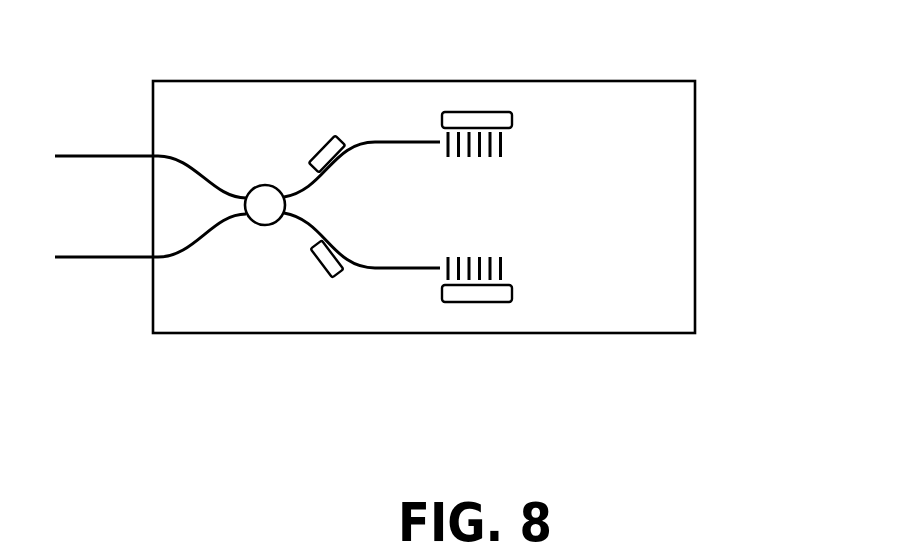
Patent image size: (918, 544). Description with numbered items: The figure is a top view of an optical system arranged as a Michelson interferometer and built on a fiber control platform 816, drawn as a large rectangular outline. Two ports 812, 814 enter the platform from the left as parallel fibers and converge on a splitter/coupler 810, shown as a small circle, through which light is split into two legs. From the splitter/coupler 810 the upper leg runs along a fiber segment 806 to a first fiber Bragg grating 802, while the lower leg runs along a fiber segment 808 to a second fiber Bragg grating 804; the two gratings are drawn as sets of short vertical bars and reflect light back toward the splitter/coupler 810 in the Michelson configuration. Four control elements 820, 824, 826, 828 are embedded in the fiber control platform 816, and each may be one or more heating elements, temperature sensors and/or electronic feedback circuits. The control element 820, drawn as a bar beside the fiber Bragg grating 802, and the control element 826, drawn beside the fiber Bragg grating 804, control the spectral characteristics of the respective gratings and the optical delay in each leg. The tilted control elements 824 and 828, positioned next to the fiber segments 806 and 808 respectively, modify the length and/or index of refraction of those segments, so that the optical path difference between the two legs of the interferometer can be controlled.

The fiber Bragg grating 802 is at (510, 145).
The fiber Bragg grating 804 is at (515, 268).
The fiber segment 806 is at (403, 140).
The fiber segment 808 is at (364, 269).
The splitter/coupler 810 is at (267, 200).
The port 812 is at (90, 156).
The port 814 is at (72, 258).
The fiber control platform 816 is at (670, 202).
The control element 820 is at (491, 120).
The control element 824 is at (325, 137).
The control element 826 is at (482, 295).
The control element 828 is at (318, 264).